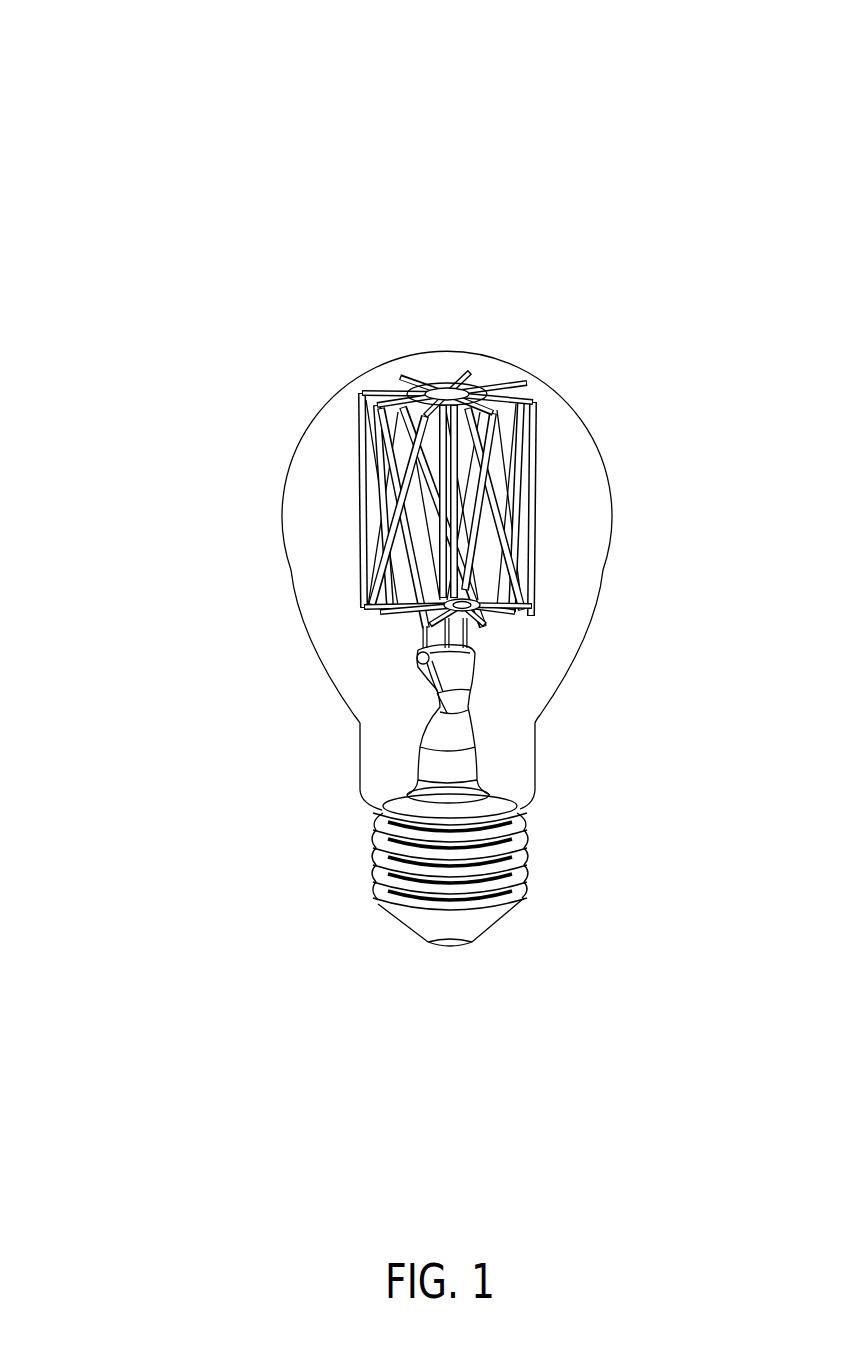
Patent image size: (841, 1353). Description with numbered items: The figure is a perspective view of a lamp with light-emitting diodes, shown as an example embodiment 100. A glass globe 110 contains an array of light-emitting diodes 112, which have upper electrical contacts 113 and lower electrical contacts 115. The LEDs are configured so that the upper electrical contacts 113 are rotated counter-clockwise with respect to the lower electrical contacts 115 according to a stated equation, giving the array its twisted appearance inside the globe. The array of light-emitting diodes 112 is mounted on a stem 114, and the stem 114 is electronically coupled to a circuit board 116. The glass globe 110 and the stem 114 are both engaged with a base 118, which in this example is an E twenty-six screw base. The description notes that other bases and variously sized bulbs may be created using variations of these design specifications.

The example embodiment 100 is at (102, 63).
The glass globe 110 is at (590, 503).
The array of light-emitting diodes 112 is at (367, 480).
The upper electrical contacts 113 is at (365, 390).
The stem 114 is at (433, 732).
The lower electrical contacts 115 is at (385, 621).
The circuit board 116 is at (380, 787).
The base 118 is at (440, 932).